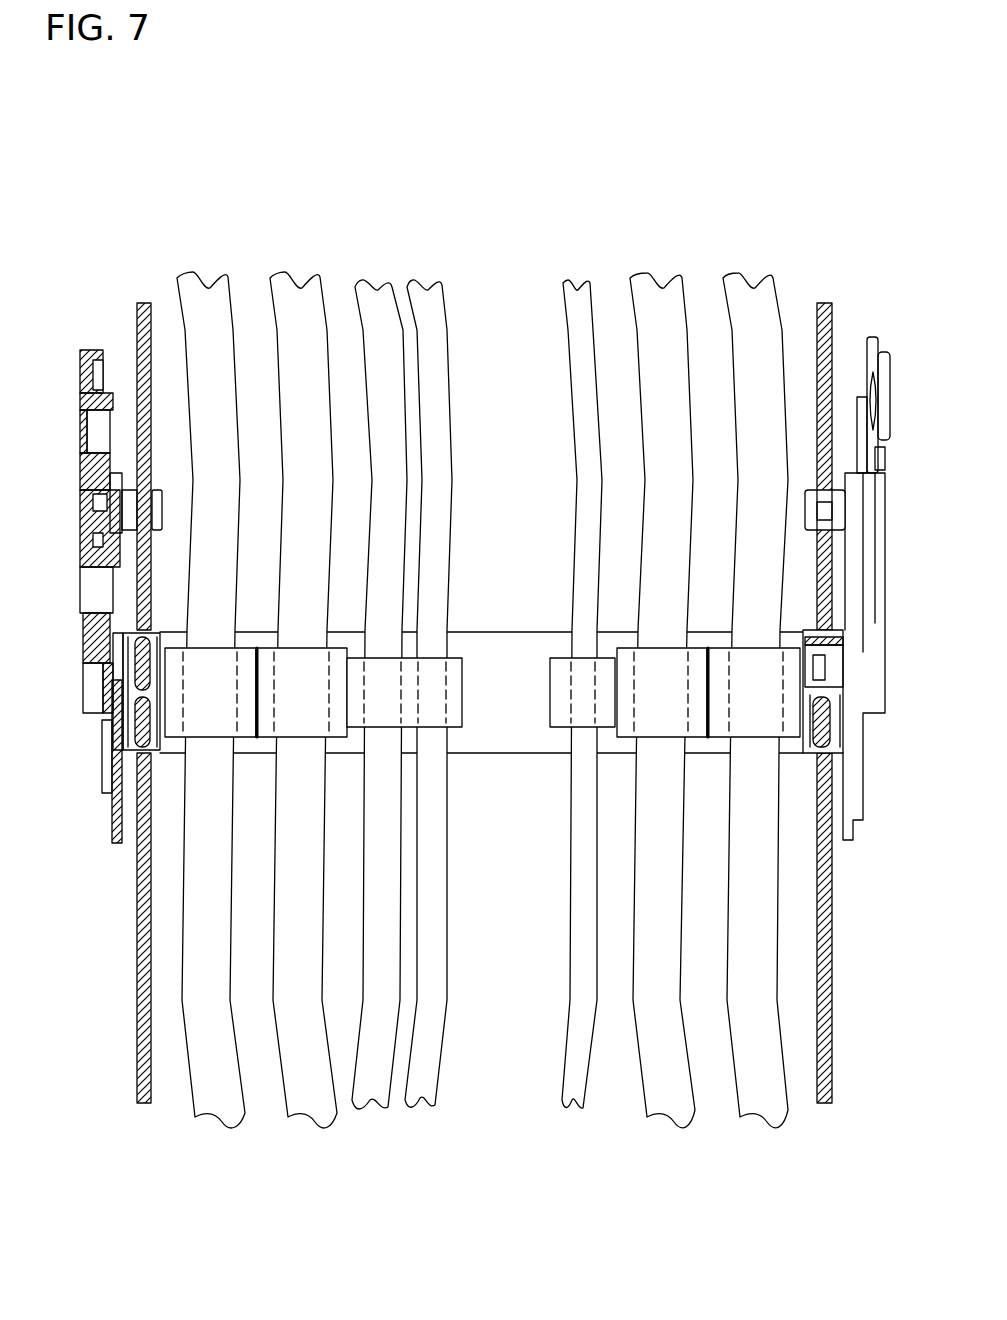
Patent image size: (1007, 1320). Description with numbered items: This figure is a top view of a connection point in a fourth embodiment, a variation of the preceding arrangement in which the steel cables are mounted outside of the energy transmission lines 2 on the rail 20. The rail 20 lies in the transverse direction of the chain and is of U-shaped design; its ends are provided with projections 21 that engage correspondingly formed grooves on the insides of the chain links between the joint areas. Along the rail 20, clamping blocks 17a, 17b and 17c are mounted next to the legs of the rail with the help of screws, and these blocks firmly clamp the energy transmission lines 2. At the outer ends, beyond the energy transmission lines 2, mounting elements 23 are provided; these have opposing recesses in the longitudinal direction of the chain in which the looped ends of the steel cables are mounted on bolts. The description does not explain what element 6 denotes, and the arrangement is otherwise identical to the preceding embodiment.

The energy transmission lines 2 is at (307, 320).
The support bar 6 is at (145, 303).
The clamping block 17a is at (482, 692).
The clamping block 17b is at (404, 692).
The clamping block 17c is at (582, 692).
The rail 20 is at (503, 790).
The projections 21 is at (115, 694).
The mounting elements 23 is at (160, 640).